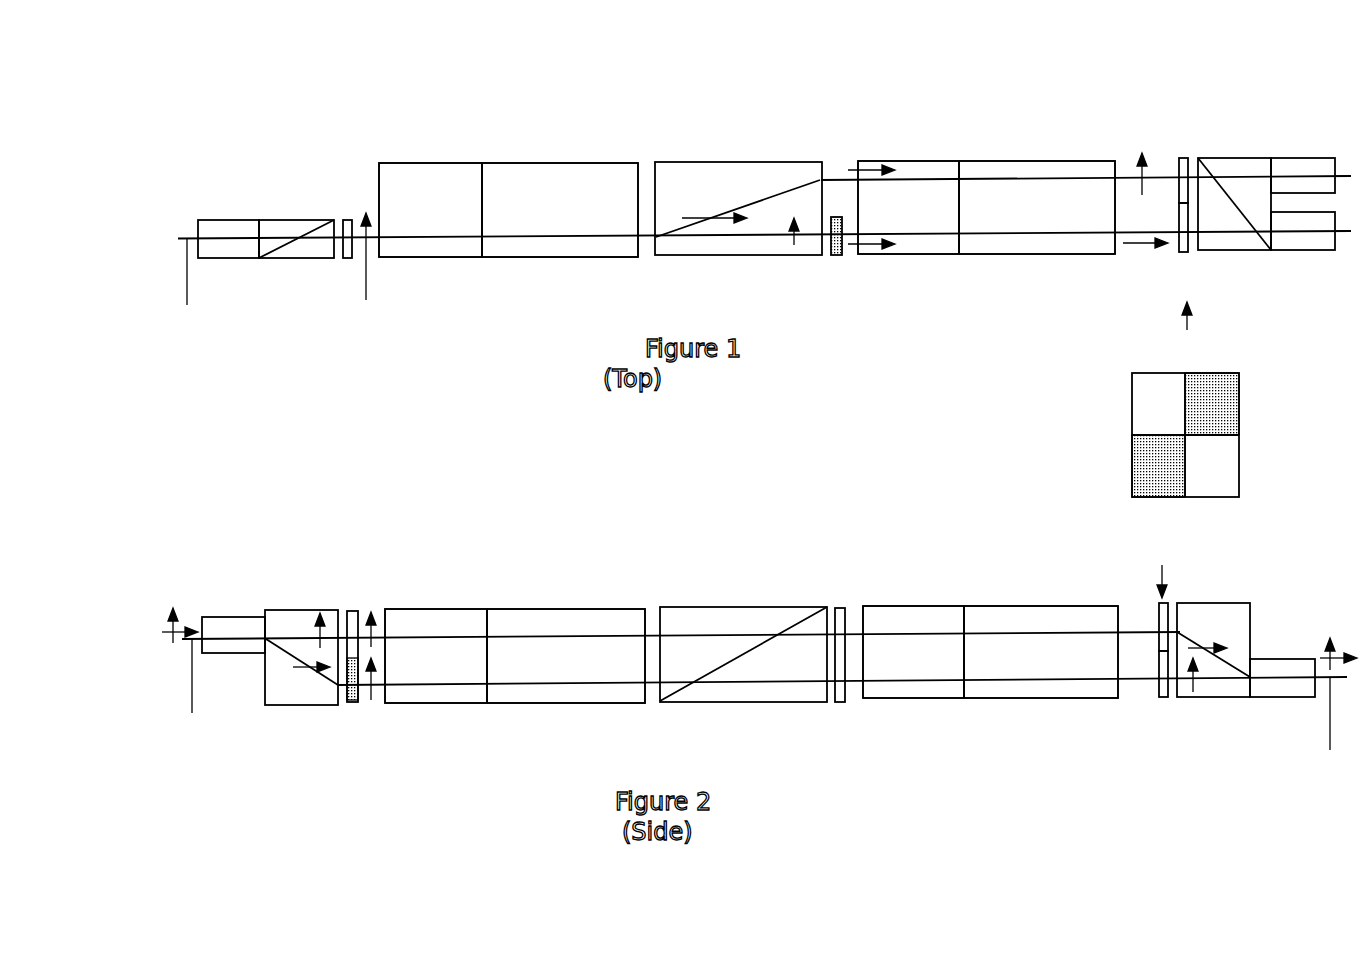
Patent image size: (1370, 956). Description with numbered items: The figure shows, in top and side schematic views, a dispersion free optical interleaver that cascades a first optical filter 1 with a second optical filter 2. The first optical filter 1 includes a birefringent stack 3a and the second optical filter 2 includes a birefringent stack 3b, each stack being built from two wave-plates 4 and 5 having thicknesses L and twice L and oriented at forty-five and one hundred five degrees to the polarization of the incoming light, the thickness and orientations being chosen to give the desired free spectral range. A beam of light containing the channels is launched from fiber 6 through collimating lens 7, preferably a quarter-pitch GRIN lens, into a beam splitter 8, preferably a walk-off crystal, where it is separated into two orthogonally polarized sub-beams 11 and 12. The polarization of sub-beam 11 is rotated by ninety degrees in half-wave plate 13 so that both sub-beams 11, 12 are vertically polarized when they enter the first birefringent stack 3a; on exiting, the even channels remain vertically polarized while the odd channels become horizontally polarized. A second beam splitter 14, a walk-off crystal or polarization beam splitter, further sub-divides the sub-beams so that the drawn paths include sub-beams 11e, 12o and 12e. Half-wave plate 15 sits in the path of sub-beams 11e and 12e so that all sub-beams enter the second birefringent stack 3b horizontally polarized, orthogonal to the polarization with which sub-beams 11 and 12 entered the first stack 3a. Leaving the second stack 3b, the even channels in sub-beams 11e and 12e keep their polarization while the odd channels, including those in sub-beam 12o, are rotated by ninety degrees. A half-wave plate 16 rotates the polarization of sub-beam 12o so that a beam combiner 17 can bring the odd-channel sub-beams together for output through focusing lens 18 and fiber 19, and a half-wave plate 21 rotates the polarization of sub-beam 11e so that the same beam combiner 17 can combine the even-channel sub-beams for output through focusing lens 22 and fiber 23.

In FIG. 1, the first optical filter 1 is at (549, 110).
In FIG. 1, the second optical filter 2 is at (999, 91).
In FIG. 1, the first birefringent stack 3a is at (458, 156).
In FIG. 2, the first birefringent stack 3a is at (529, 598).
In FIG. 1, the second birefringent stack 3b is at (920, 153).
In FIG. 2, the second birefringent stack 3b is at (964, 593).
In FIG. 1, the wave-plate 4 is at (442, 257).
In FIG. 2, the wave-plate 4 is at (462, 610).
In FIG. 1, the wave-plate 5 is at (538, 257).
In FIG. 2, the wave-plate 5 is at (529, 702).
In FIG. 1, the fiber 6 is at (764, 284).
In FIG. 2, the fiber 6 is at (681, 691).
In FIG. 1, the collimating lens 7 is at (226, 225).
In FIG. 2, the collimating lens 7 is at (233, 623).
In FIG. 1, the beam splitter 8 is at (302, 255).
In FIG. 2, the beam splitter 8 is at (295, 702).
In FIG. 2, the sub-beam 11 is at (378, 683).
In FIG. 2, the sub-beam 11e is at (870, 815).
In FIG. 1, the sub-beam 12 is at (362, 297).
In FIG. 2, the sub-beam 12 is at (381, 637).
In FIG. 1, the sub-beam 12o is at (840, 182).
In FIG. 1, the sub-beam 12e is at (851, 235).
In FIG. 2, the sub-beam 12e is at (863, 790).
In FIG. 1, the half-wave plate 13 is at (347, 220).
In FIG. 2, the half-wave plate 13 is at (355, 703).
In FIG. 1, the second beam splitter 14 is at (725, 161).
In FIG. 2, the second beam splitter 14 is at (735, 607).
In FIG. 1, the half-wave plate 15 is at (833, 255).
In FIG. 2, the half-wave plate 15 is at (840, 703).
In FIG. 1, the half-wave plate 16 is at (1183, 252).
In FIG. 2, the half-wave plate 16 is at (1158, 603).
In FIG. 1, the beam combiner 17 is at (1228, 158).
In FIG. 2, the beam combiner 17 is at (1232, 612).
In FIG. 1, the focusing lens 18 is at (1300, 158).
In FIG. 1, the fiber 19 is at (1348, 176).
In FIG. 1, the half-wave plate 21 is at (1176, 158).
In FIG. 2, the half-wave plate 21 is at (1160, 697).
In FIG. 1, the focusing lens 22 is at (1293, 250).
In FIG. 2, the focusing lens 22 is at (1273, 690).
In FIG. 1, the fiber 23 is at (1347, 230).
In FIG. 2, the fiber 23 is at (1331, 708).